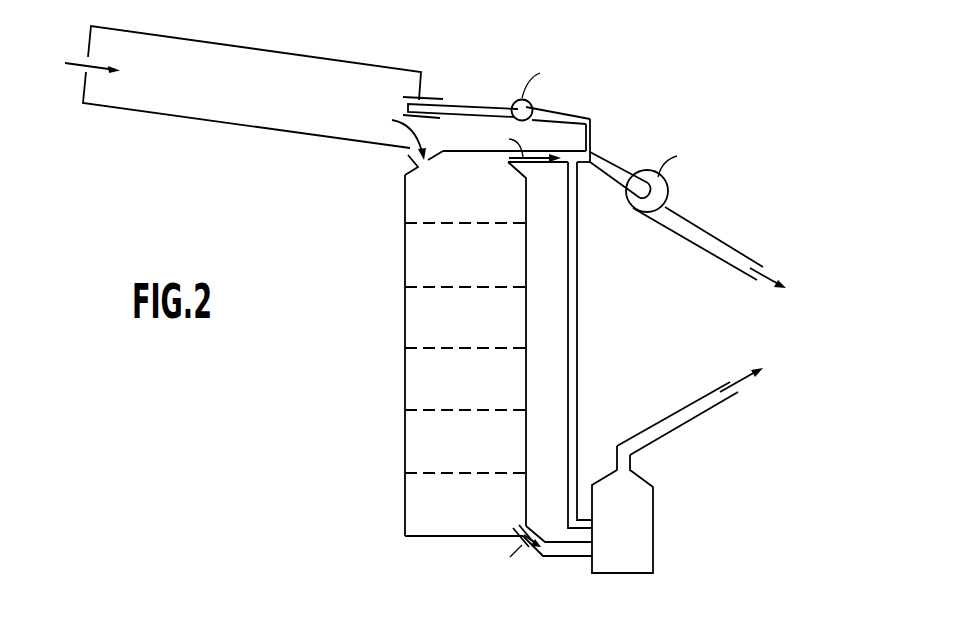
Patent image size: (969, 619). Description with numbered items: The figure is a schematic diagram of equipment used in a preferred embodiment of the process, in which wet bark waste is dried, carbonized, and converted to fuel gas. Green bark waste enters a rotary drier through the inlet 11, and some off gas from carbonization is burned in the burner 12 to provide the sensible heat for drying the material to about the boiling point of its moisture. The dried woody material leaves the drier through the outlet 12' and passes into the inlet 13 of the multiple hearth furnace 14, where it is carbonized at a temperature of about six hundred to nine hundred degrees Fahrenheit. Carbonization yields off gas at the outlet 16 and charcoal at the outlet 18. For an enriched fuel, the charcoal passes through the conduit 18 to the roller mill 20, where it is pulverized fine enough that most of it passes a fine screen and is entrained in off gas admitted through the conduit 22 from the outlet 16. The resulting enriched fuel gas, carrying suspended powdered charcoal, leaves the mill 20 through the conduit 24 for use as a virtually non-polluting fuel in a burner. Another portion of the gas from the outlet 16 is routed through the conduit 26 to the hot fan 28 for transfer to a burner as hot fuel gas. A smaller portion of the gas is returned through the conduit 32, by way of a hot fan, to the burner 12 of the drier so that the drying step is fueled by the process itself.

The inlet 11 is at (92, 60).
The burner 12 is at (460, 77).
The outlet 12' is at (387, 134).
The inlet 13 is at (437, 185).
The multiple hearth furnace 14 is at (405, 332).
The outlet 16 is at (556, 150).
The outlet 18 is at (527, 528).
The roller mill 20 is at (655, 511).
The conduit 22 is at (578, 262).
The conduit 24 is at (683, 407).
The conduit 26 is at (620, 162).
The hot fan 28 is at (666, 193).
The conduit 32 is at (535, 106).